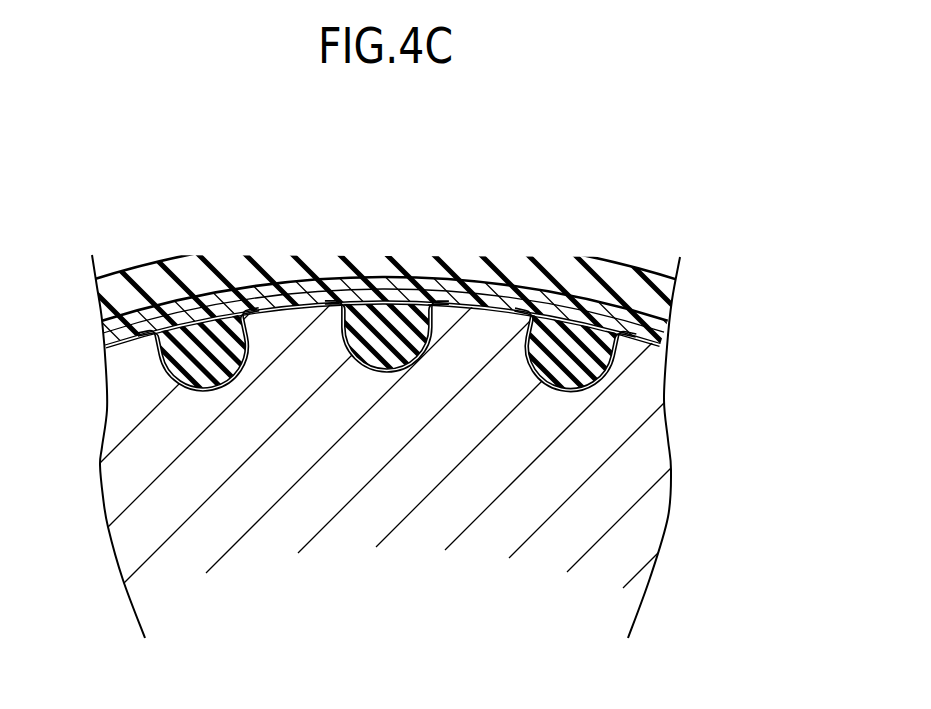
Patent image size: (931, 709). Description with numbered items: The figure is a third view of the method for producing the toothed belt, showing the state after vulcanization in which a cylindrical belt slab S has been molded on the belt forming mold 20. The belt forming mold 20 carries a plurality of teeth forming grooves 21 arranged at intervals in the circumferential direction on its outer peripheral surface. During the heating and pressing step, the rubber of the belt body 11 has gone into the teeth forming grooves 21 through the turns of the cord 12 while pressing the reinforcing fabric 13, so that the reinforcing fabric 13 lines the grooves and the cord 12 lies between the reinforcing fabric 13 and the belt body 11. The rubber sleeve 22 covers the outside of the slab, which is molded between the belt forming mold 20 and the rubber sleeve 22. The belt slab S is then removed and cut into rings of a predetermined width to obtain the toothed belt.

The belt body 11 is at (456, 284).
The cord 12 is at (232, 306).
The reinforcing fabric 13 is at (217, 395).
The belt forming mold 20 is at (643, 520).
The teeth forming grooves 21 is at (244, 364).
The rubber sleeve 22 is at (357, 253).
The belt slab S is at (588, 298).